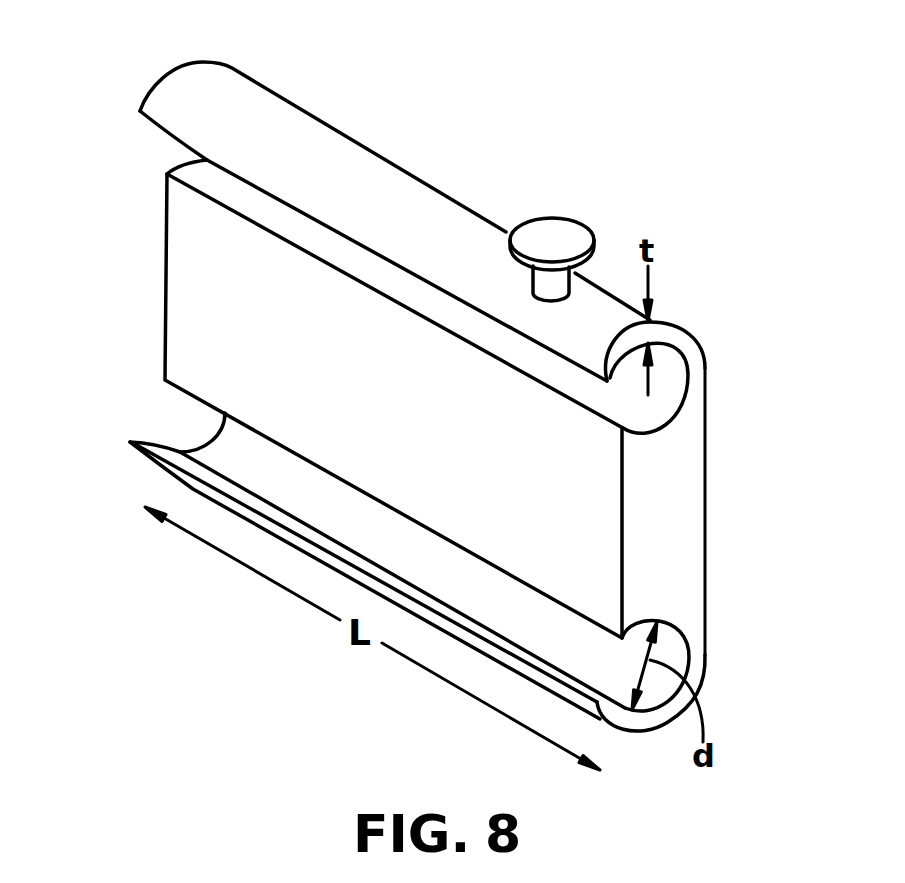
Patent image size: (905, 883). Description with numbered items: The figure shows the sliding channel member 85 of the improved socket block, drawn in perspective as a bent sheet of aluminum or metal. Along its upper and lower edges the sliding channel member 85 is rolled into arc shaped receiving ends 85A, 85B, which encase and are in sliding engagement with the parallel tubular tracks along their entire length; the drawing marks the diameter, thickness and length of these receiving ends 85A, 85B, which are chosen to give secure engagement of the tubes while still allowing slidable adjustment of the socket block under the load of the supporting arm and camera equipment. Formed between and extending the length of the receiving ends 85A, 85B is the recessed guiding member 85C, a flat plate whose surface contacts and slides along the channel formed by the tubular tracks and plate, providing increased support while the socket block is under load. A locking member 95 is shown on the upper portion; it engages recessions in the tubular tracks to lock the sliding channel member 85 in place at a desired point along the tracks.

The sliding channel member 85 is at (412, 370).
The receiving end 85A is at (137, 113).
The receiving end 85B is at (134, 446).
The recessed guiding member 85C is at (197, 305).
The locking member 95 is at (568, 230).